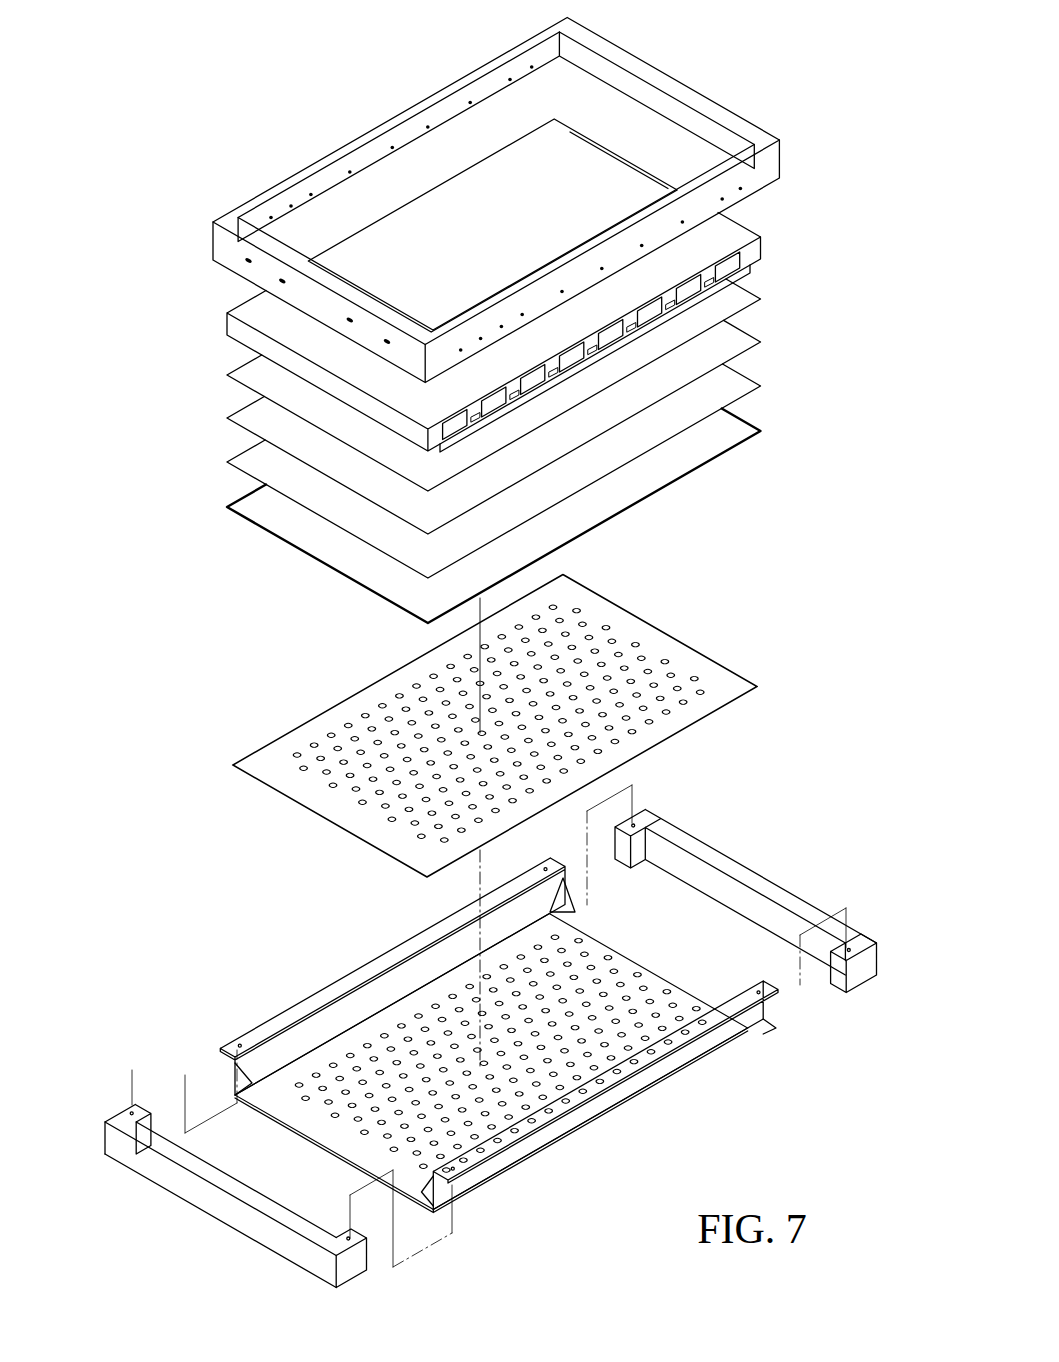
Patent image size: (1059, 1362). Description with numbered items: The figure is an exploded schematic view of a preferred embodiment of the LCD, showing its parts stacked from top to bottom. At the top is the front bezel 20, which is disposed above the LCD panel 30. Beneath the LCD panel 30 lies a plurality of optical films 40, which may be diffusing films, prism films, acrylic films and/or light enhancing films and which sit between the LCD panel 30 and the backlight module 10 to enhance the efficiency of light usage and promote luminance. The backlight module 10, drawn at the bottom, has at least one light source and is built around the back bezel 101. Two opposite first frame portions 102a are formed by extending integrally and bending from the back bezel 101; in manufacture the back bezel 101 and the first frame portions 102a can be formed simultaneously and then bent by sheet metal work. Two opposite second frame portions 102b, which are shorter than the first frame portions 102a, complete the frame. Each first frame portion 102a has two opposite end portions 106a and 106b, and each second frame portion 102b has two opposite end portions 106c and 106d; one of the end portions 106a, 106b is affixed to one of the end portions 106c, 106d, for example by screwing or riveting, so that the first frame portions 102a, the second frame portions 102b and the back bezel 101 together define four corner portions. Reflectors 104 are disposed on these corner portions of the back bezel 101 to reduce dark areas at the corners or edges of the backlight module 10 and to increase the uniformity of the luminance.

The backlight module 10 is at (477, 1042).
The front bezel 20 is at (332, 156).
The LCD panel 30 is at (754, 254).
The optical films 40 is at (222, 368).
The back bezel 101 is at (281, 1094).
The first frame portions 102a is at (362, 1009).
The second frame portions 102b is at (767, 887).
The reflectors 104 is at (577, 913).
The end portion 106a is at (438, 1188).
The end portion 106b is at (777, 1028).
The end portion 106c is at (305, 1268).
The end portion 106d is at (105, 1147).